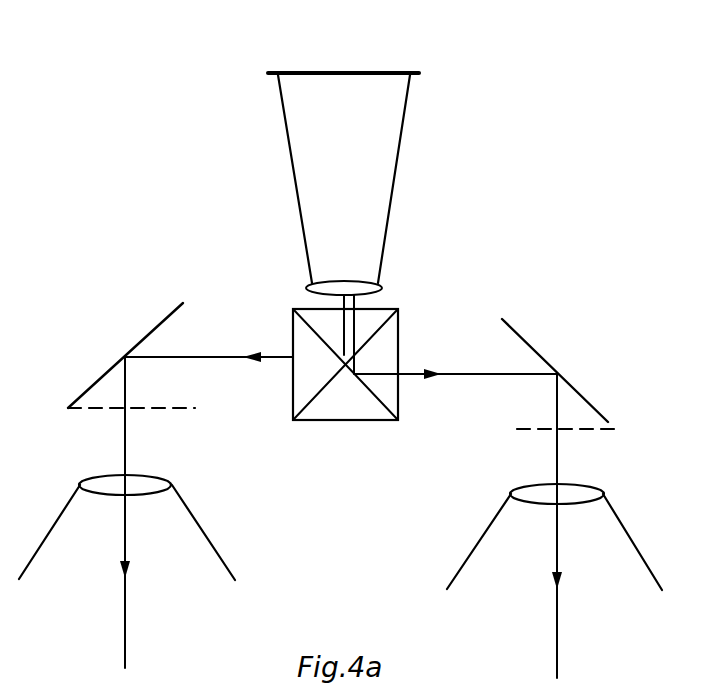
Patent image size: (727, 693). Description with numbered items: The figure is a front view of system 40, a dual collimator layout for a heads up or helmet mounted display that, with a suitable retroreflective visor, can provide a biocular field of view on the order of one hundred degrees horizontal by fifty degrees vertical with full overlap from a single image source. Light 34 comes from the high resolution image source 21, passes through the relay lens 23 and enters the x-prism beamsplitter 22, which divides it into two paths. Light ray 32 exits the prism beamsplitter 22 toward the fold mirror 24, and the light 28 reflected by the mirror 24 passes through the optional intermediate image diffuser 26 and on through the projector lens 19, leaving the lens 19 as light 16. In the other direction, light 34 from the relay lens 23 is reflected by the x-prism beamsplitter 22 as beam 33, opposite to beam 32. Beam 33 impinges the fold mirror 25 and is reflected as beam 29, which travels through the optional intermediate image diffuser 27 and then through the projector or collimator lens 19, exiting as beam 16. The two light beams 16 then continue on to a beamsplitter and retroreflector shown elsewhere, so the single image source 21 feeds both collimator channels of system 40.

The light 16 is at (125, 578).
The projector lens 19 is at (182, 483).
The high resolution image source 21 is at (327, 73).
The x-prism beamsplitter 22 is at (398, 362).
The relay lens 23 is at (312, 284).
The fold mirror 24 is at (125, 357).
The fold mirror 25 is at (515, 328).
The intermediate image diffuser 26 is at (163, 415).
The intermediate image diffuser 27 is at (510, 432).
The light 28 is at (125, 437).
The beam 29 is at (560, 447).
The light ray 32 is at (197, 357).
The beam 33 is at (500, 373).
The light 34 is at (303, 232).
The system 40 is at (607, 130).